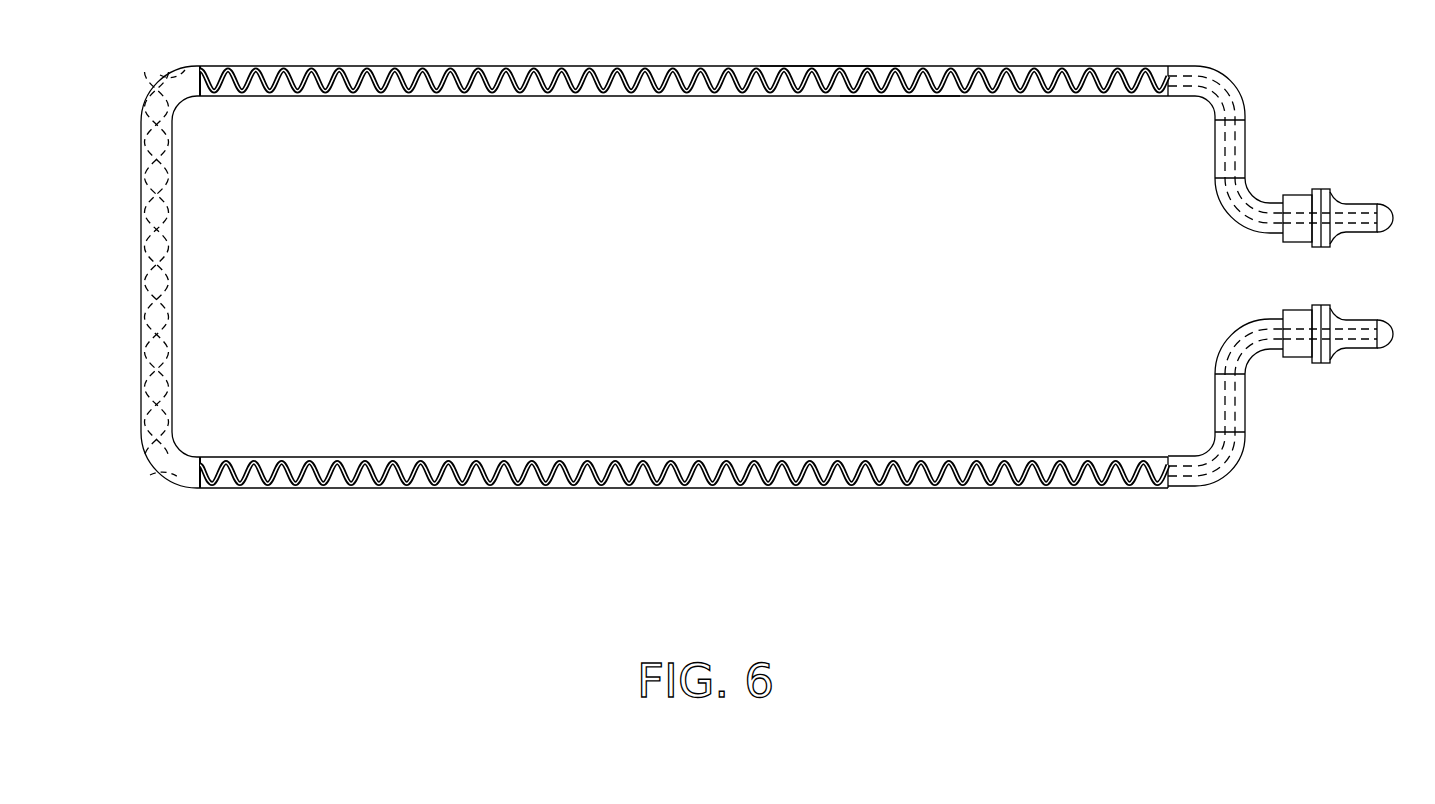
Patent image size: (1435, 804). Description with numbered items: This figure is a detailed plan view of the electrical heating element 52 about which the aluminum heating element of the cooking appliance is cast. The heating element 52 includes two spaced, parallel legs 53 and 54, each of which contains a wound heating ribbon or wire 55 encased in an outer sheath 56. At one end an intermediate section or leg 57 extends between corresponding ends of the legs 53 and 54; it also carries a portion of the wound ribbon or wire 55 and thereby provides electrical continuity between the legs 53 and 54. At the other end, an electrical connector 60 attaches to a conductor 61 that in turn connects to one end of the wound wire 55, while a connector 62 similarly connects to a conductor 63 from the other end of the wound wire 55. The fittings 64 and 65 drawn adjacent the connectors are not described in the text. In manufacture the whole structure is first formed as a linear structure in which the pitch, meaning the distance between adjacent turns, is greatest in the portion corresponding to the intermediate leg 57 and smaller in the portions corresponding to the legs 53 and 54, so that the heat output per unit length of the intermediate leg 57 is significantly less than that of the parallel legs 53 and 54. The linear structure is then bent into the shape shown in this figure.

The electrical heating element 52 is at (866, 550).
The leg 53 is at (733, 98).
The leg 54 is at (720, 456).
The wound heating ribbon or wire 55 is at (890, 66).
The outer sheath 56 is at (823, 65).
The intermediate section or leg 57 is at (175, 290).
The electrical connector 60 is at (1346, 204).
The conductor 61 is at (1247, 153).
The connector 62 is at (1365, 348).
The conductor 63 is at (1247, 398).
The upper connector 64 is at (1300, 195).
The lower connector 65 is at (1298, 357).